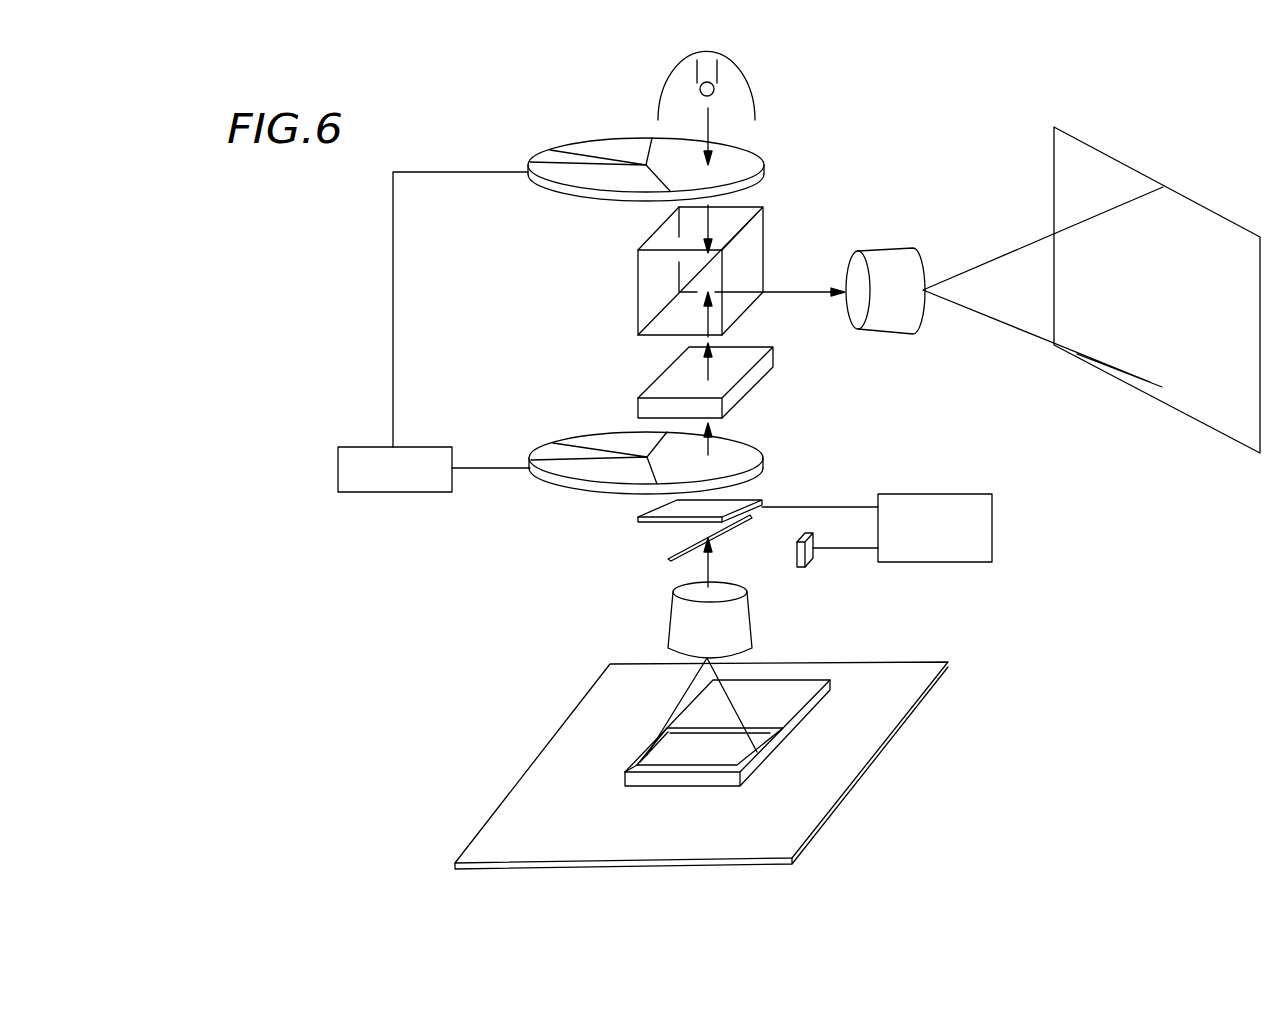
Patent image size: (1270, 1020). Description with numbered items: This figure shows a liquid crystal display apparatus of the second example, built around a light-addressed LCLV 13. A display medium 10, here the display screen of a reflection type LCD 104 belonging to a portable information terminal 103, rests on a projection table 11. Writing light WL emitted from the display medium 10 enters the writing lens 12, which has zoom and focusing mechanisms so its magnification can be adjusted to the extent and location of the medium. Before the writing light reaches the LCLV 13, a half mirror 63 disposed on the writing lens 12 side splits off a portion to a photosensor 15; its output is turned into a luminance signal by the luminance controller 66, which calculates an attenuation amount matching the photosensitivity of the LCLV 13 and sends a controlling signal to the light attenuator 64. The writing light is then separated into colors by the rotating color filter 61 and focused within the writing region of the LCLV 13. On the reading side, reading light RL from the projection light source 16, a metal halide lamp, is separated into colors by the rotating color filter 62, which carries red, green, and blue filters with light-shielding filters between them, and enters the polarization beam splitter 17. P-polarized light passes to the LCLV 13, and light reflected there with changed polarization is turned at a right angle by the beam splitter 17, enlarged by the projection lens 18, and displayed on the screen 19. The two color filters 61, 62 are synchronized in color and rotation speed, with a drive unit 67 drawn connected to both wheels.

The display medium 10 is at (780, 760).
The projection table 11 is at (852, 790).
The writing lens 12 is at (668, 622).
The light-addressed LCLV 13 is at (660, 373).
The photosensor 15 is at (810, 562).
The projection light source 16 is at (748, 85).
The polarization beam splitter 17 is at (660, 237).
The projection lens 18 is at (855, 273).
The screen 19 is at (1117, 177).
The rotating color filter 61 is at (737, 453).
The rotating color filter 62 is at (592, 142).
The half mirror 63 is at (660, 542).
The light attenuator 64 is at (642, 507).
The luminance controller 66 is at (993, 527).
The drive circuit 67 is at (412, 492).
The portable information terminal 103 is at (602, 767).
The reflection type LCD 104 is at (662, 755).
The read light RL is at (710, 120).
The write light WL is at (715, 565).